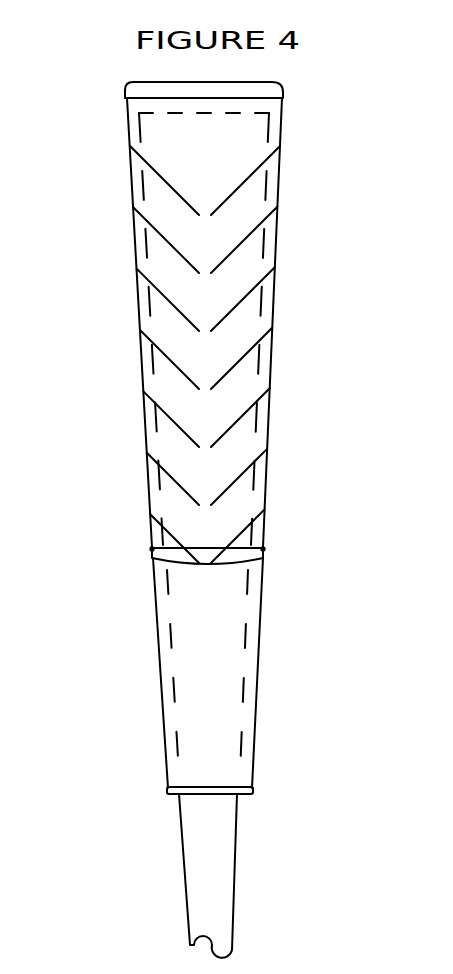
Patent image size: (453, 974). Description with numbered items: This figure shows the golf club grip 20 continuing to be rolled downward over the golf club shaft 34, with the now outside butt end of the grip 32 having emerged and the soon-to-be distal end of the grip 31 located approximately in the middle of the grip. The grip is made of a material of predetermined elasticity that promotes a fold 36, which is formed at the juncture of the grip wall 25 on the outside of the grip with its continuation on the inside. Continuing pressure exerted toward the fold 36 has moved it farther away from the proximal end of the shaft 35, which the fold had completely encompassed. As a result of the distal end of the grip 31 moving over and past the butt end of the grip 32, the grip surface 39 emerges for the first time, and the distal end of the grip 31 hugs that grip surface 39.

The golf club grip 20 is at (298, 385).
The butt end of the grip 32 is at (150, 92).
The proximal end of the shaft 35 is at (180, 117).
The grip surface 39 is at (182, 337).
The distal end of the grip 31 is at (185, 567).
The grip wall 25 is at (207, 665).
The golf club shaft 34 is at (246, 635).
The fold 36 is at (175, 793).